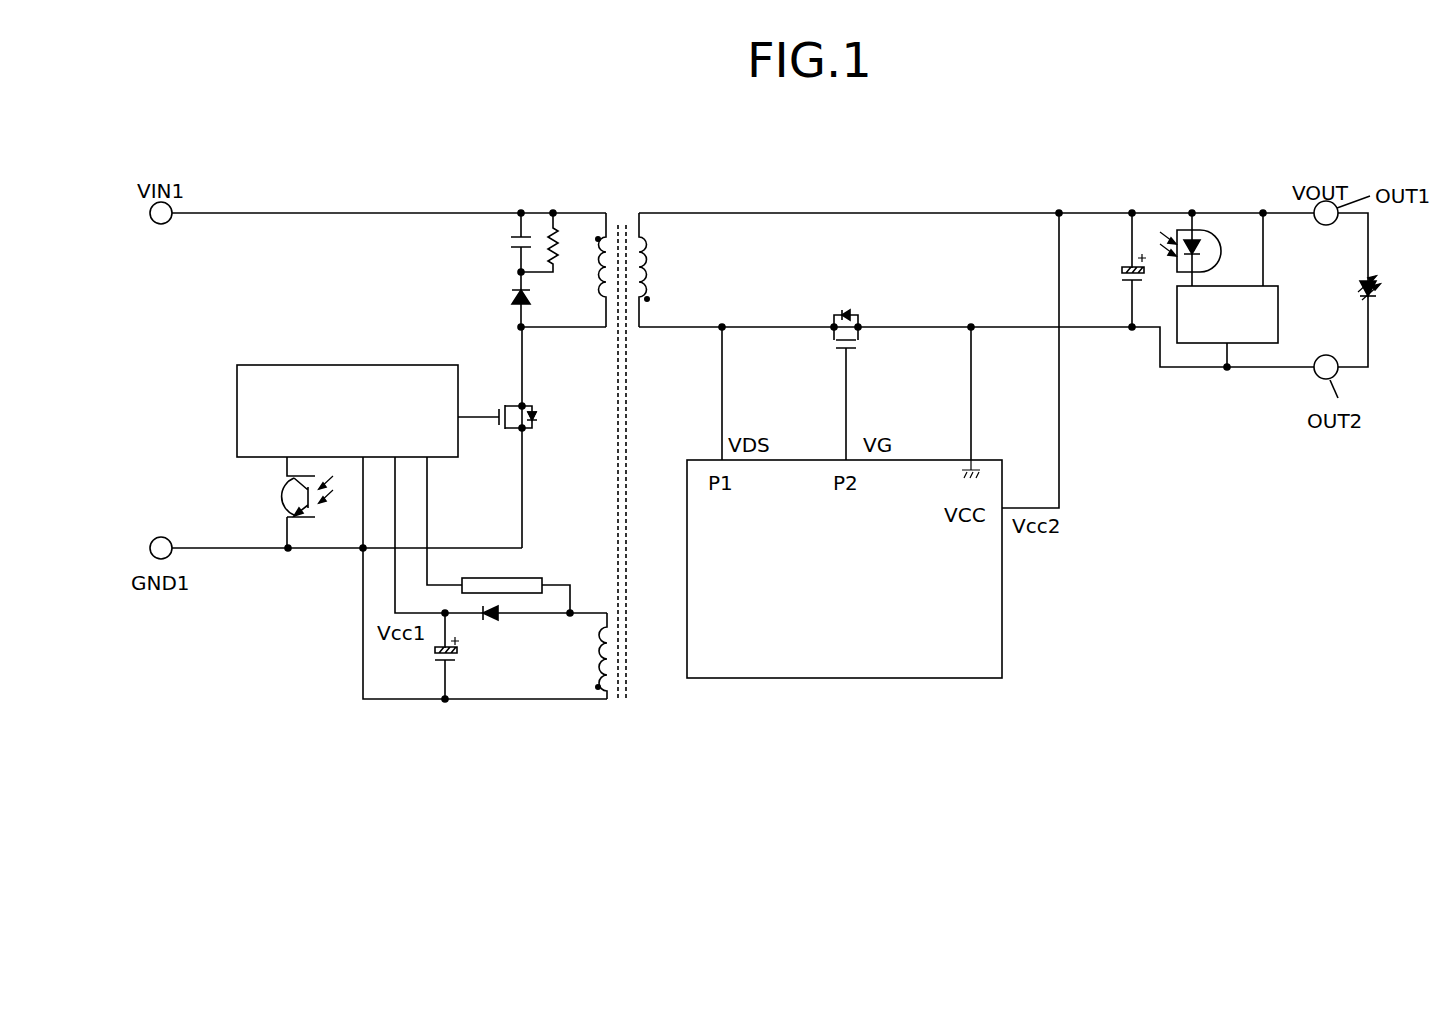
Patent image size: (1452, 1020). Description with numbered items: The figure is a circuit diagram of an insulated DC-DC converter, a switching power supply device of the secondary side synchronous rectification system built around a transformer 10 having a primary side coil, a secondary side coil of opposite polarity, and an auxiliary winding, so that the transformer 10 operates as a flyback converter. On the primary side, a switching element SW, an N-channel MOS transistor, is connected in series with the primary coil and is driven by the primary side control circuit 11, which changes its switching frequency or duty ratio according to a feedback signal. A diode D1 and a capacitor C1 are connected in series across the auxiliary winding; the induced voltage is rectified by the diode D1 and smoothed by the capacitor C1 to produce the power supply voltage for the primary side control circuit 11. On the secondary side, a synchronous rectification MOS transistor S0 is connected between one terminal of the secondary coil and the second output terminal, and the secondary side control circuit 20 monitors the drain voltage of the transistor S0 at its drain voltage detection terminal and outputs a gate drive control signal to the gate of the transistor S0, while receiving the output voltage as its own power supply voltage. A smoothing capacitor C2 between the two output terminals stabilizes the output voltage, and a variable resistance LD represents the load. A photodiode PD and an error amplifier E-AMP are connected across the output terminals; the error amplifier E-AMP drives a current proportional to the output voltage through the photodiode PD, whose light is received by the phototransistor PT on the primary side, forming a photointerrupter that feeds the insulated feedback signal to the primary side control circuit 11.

The transformer 10 is at (633, 201).
The primary side control circuit 11 is at (347, 366).
The secondary side control circuit 20 is at (1005, 627).
The switching element SW is at (533, 409).
The phototransistor PT is at (268, 500).
The diode D1 is at (494, 628).
The capacitor C1 is at (460, 656).
The smoothing capacitor C2 is at (1117, 270).
The synchronous rectification MOS transistor S0 is at (845, 372).
The photodiode PD is at (1208, 230).
The error amplifier E-AMP is at (1280, 295).
The variable resistance LD is at (1382, 293).